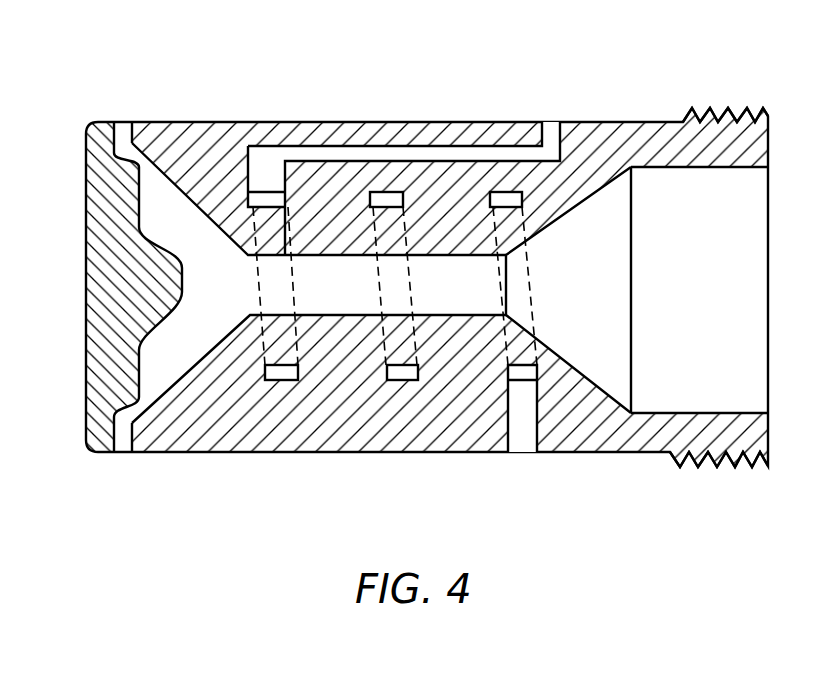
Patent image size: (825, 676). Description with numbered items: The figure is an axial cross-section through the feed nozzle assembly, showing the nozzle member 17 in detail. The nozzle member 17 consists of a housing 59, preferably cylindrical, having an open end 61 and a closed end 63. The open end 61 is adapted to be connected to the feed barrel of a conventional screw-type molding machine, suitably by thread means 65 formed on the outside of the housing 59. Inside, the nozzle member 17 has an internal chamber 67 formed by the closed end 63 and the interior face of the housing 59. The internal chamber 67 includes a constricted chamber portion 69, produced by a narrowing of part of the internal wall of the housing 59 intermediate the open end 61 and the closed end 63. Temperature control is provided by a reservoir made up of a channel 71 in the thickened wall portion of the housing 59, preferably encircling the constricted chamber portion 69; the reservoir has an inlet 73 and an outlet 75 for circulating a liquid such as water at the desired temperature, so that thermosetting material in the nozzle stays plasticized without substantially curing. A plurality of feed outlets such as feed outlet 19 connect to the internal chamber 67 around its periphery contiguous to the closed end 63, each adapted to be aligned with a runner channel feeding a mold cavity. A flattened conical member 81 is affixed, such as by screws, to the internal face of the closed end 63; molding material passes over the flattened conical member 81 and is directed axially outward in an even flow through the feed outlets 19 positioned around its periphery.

The nozzle member 17 is at (316, 112).
The feed outlet 19 is at (121, 440).
The housing 59 is at (350, 453).
The open end 61 is at (768, 277).
The closed end 63 is at (87, 232).
The thread means 65 is at (720, 467).
The internal chamber 67 is at (593, 295).
The constricted chamber portion 69 is at (341, 295).
The channel 71 is at (400, 378).
The inlet 73 is at (553, 128).
The outlet 75 is at (518, 443).
The flattened conical member 81 is at (90, 310).